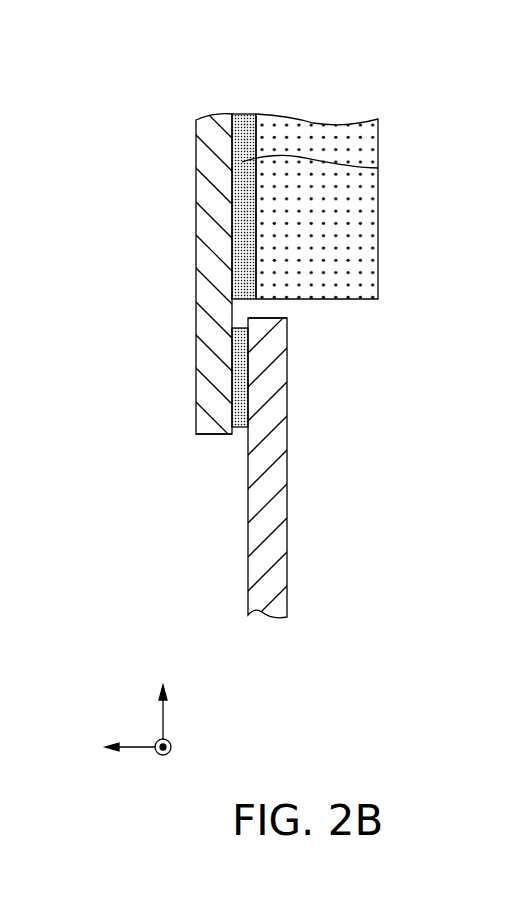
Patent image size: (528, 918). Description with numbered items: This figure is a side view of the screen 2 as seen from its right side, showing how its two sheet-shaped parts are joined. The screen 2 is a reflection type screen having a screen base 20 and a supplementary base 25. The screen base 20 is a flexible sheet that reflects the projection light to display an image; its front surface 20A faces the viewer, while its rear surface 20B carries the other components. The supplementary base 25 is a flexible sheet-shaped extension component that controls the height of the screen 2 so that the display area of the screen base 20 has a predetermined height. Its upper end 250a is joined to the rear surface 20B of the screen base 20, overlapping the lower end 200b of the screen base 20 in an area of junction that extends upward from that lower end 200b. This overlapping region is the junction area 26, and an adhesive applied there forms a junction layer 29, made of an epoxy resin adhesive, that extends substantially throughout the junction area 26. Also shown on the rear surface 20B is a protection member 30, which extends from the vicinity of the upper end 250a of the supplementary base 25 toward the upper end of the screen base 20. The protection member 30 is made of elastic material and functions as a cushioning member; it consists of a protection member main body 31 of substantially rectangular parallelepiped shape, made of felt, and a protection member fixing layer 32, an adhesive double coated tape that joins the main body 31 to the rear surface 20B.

The screen 2 is at (442, 49).
The screen base 20 is at (203, 145).
The front surface 20A is at (198, 215).
The rear surface 20B is at (243, 137).
The junction area 26 is at (190, 325).
The lower end 200b is at (201, 415).
The protection member 30 is at (453, 145).
The protection member main body 31 is at (367, 200).
The protection member fixing layer 32 is at (378, 168).
The supplementary base 25 is at (278, 510).
The upper end 250a is at (280, 343).
The junction layer 29 is at (247, 390).